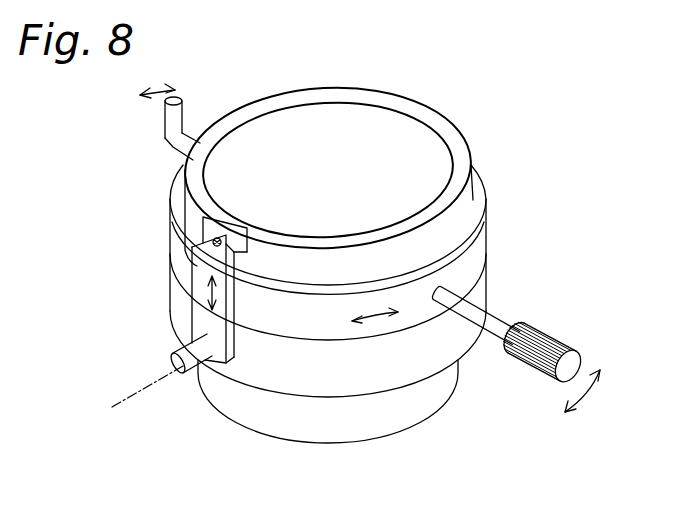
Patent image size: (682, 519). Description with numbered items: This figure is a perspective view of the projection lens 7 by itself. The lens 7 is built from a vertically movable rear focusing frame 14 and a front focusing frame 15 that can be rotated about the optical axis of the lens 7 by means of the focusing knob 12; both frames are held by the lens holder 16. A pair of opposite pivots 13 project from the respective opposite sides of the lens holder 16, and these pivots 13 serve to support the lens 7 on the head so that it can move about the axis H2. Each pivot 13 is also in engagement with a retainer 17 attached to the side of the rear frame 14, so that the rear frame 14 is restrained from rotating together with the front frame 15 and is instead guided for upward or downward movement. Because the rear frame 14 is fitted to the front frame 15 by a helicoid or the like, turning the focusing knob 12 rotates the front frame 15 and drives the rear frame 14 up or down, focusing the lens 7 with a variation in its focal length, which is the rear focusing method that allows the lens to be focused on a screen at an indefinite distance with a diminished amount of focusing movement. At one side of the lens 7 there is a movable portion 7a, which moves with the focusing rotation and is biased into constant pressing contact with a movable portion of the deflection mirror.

The projection lens 7 is at (433, 113).
The movable portion 7a is at (173, 118).
The focusing knob 12 is at (560, 342).
The pivots 13 is at (203, 367).
The rear focusing frame 14 is at (463, 207).
The front focusing frame 15 is at (477, 255).
The lens holder 16 is at (490, 293).
The retainers 17 is at (197, 302).
The axis H2 is at (132, 402).